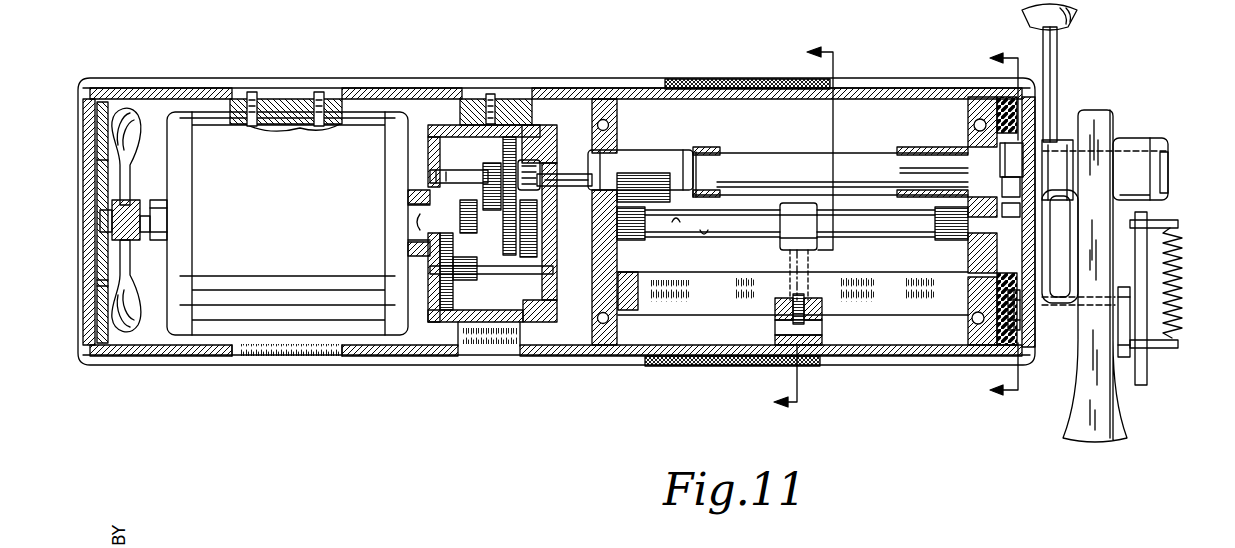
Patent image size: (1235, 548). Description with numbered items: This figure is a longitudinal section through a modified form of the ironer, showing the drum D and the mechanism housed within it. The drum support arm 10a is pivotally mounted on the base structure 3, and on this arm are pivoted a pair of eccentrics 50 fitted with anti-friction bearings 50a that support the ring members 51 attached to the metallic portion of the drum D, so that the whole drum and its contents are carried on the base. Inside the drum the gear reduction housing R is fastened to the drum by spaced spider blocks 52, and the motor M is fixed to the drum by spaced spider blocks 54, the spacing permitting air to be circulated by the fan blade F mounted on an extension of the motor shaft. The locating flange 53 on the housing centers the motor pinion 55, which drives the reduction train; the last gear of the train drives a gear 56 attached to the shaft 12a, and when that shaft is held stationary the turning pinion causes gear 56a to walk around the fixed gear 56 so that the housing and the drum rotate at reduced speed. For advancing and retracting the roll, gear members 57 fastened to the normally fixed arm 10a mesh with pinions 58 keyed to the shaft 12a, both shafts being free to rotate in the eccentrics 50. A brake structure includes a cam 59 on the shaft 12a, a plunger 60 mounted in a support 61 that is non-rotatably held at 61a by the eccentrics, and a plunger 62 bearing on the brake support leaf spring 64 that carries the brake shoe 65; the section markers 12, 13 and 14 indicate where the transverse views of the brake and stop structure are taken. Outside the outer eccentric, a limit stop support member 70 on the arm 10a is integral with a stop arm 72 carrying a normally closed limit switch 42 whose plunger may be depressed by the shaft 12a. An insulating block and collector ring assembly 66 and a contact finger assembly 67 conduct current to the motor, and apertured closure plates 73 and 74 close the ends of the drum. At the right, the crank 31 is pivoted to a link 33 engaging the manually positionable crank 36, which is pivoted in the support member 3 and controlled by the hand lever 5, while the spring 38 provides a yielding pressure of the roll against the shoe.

The drum D is at (302, 77).
The apertured closure plate 74 is at (96, 110).
The fan blade F is at (130, 120).
The motor M is at (296, 222).
The spider blocks 54 is at (340, 100).
The locating flange 53 is at (410, 196).
The gear reduction housing R is at (548, 114).
The spider blocks 52 is at (505, 100).
The motor pinion 55 is at (450, 207).
The gear 56a is at (541, 168).
The gear 56 is at (550, 190).
The ring members 51 is at (616, 100).
The eccentrics 50 is at (618, 152).
The anti-friction bearings 50a is at (612, 140).
The drum support arm 10a is at (765, 155).
The gear members 57 is at (700, 152).
The pinions 58 is at (658, 237).
The shaft 12a is at (722, 223).
The plunger 60 is at (793, 248).
The cam 59 is at (808, 248).
The support 61 is at (758, 281).
The non-rotatable support mounting 61a is at (634, 283).
The plunger 62 is at (782, 318).
The brake support leaf spring 64 is at (822, 324).
The brake shoe 65 is at (795, 364).
The section line 12-13 (upper) 12 is at (833, 139).
The section line 12-13 (lower) 13 is at (801, 385).
The section line 14 is at (1025, 56).
The apertured closure plate 73 is at (1030, 110).
The limit stop support member 70 is at (1013, 164).
The clutch key 42 is at (1012, 188).
The stop arm 72 is at (976, 260).
The contact finger assembly 67 is at (1014, 300).
The insulating block and collector ring assembly 66 is at (1003, 350).
The pressure release lever 5 is at (1050, 58).
The bracket 3 is at (1090, 362).
The crank 31 is at (1135, 145).
The link 33 is at (1147, 242).
The spring 38 is at (1180, 285).
The manually positionable crank 36 is at (1127, 357).